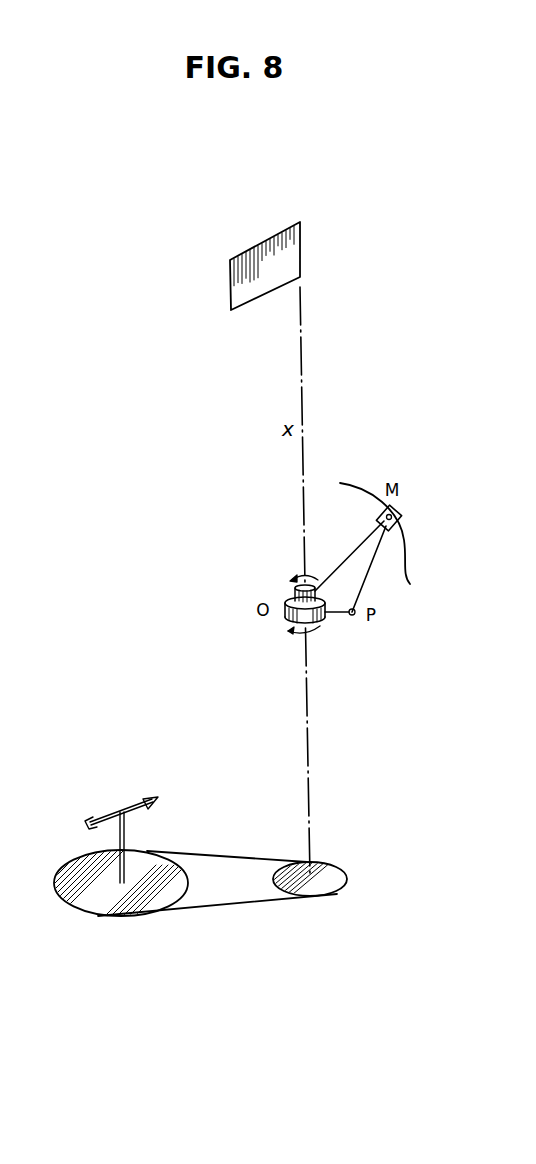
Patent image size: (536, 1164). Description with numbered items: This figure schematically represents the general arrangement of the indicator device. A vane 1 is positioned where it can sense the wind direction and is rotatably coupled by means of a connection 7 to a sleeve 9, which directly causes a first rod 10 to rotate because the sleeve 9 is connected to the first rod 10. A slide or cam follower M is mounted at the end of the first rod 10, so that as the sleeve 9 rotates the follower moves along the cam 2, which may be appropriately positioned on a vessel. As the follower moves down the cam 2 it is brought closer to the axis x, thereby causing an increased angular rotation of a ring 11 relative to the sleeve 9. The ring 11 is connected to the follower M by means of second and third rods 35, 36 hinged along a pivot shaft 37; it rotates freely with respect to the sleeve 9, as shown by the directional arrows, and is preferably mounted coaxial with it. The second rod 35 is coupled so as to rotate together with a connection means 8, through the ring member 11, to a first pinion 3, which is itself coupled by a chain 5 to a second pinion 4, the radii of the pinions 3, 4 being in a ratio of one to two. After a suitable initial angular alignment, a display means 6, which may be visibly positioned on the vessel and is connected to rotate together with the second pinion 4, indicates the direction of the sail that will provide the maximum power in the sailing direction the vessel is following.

The vane 1 is at (253, 248).
The cam 2 is at (401, 553).
The first pinion 3 is at (330, 884).
The second pinion 4 is at (114, 910).
The chain 5 is at (230, 905).
The display means 6 is at (118, 812).
The connection 7 is at (303, 362).
The connection means 8 is at (310, 741).
The sleeve 9 is at (297, 583).
The first rod 10 is at (345, 558).
The ring 11 is at (291, 636).
The second rod 35 is at (335, 618).
The third rod 36 is at (367, 580).
The pivot shaft 37 is at (356, 616).